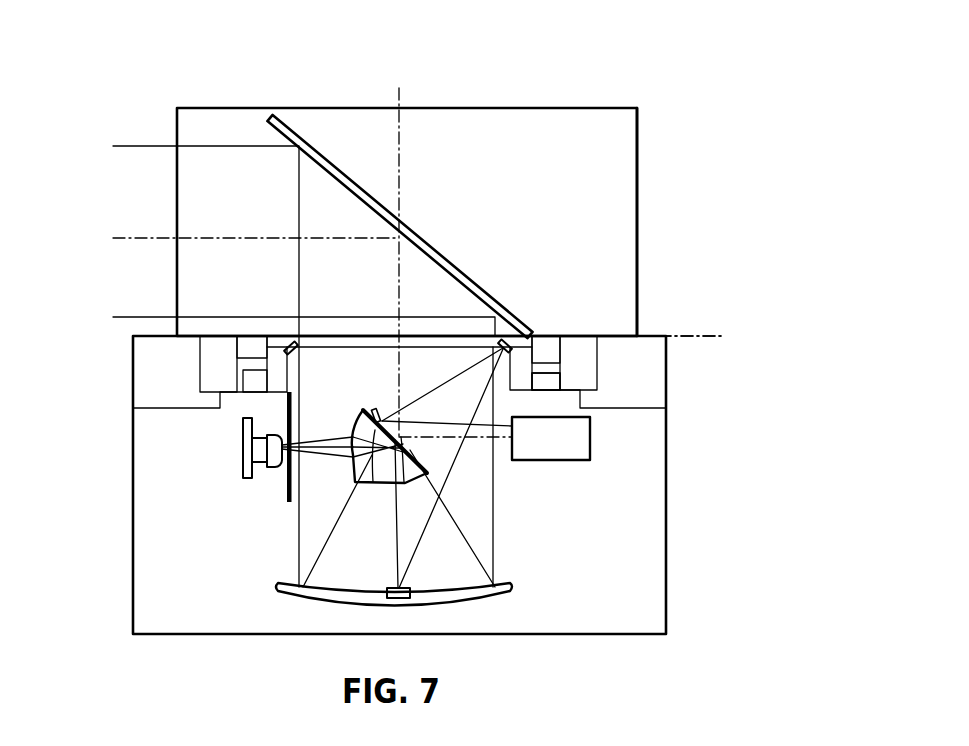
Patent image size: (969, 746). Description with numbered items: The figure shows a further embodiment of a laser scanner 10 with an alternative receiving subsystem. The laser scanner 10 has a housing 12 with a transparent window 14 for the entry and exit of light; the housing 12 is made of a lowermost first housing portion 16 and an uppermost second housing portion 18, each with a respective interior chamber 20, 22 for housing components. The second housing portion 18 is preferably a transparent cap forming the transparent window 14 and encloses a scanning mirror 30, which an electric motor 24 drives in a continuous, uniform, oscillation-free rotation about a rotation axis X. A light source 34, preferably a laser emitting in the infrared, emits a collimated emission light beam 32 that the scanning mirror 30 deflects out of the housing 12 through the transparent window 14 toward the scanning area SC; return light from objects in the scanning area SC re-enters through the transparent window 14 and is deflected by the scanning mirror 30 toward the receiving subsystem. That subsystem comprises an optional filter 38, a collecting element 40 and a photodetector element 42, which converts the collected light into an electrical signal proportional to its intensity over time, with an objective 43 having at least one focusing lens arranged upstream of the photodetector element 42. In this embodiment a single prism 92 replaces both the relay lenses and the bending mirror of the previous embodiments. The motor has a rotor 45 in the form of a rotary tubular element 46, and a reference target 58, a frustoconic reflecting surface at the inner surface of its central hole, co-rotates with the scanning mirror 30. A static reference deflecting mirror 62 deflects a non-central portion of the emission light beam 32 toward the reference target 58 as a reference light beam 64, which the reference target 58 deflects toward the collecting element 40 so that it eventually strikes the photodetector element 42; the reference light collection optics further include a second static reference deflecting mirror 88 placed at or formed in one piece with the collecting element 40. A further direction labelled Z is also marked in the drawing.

The laser scanner 10 is at (428, 320).
The housing 12 is at (697, 311).
The transparent window 14 is at (640, 192).
The first housing portion 16 is at (667, 525).
The second housing portion 18 is at (575, 106).
The interior chamber 20 is at (656, 614).
The interior chamber 22 is at (624, 148).
The electric motor 24 is at (608, 418).
The scanning mirror 30 is at (459, 224).
The emission light beam 32 is at (228, 238).
The light source 34 is at (578, 448).
The filter 38 is at (287, 498).
The collecting element 40 is at (300, 600).
The photodetector element 42 is at (260, 445).
The objective 43 is at (270, 465).
The rotor 45 is at (523, 370).
The rotary tubular element 46 is at (702, 400).
The reference target 58 is at (508, 338).
The static reference deflecting mirror 62 is at (378, 416).
The reference light beam 64 is at (417, 400).
The second static reference deflecting mirror 88 is at (410, 598).
The prism 92 is at (362, 476).
The rotation axis X is at (400, 142).
The axis Z is at (710, 338).
The scanning area SC is at (226, 234).